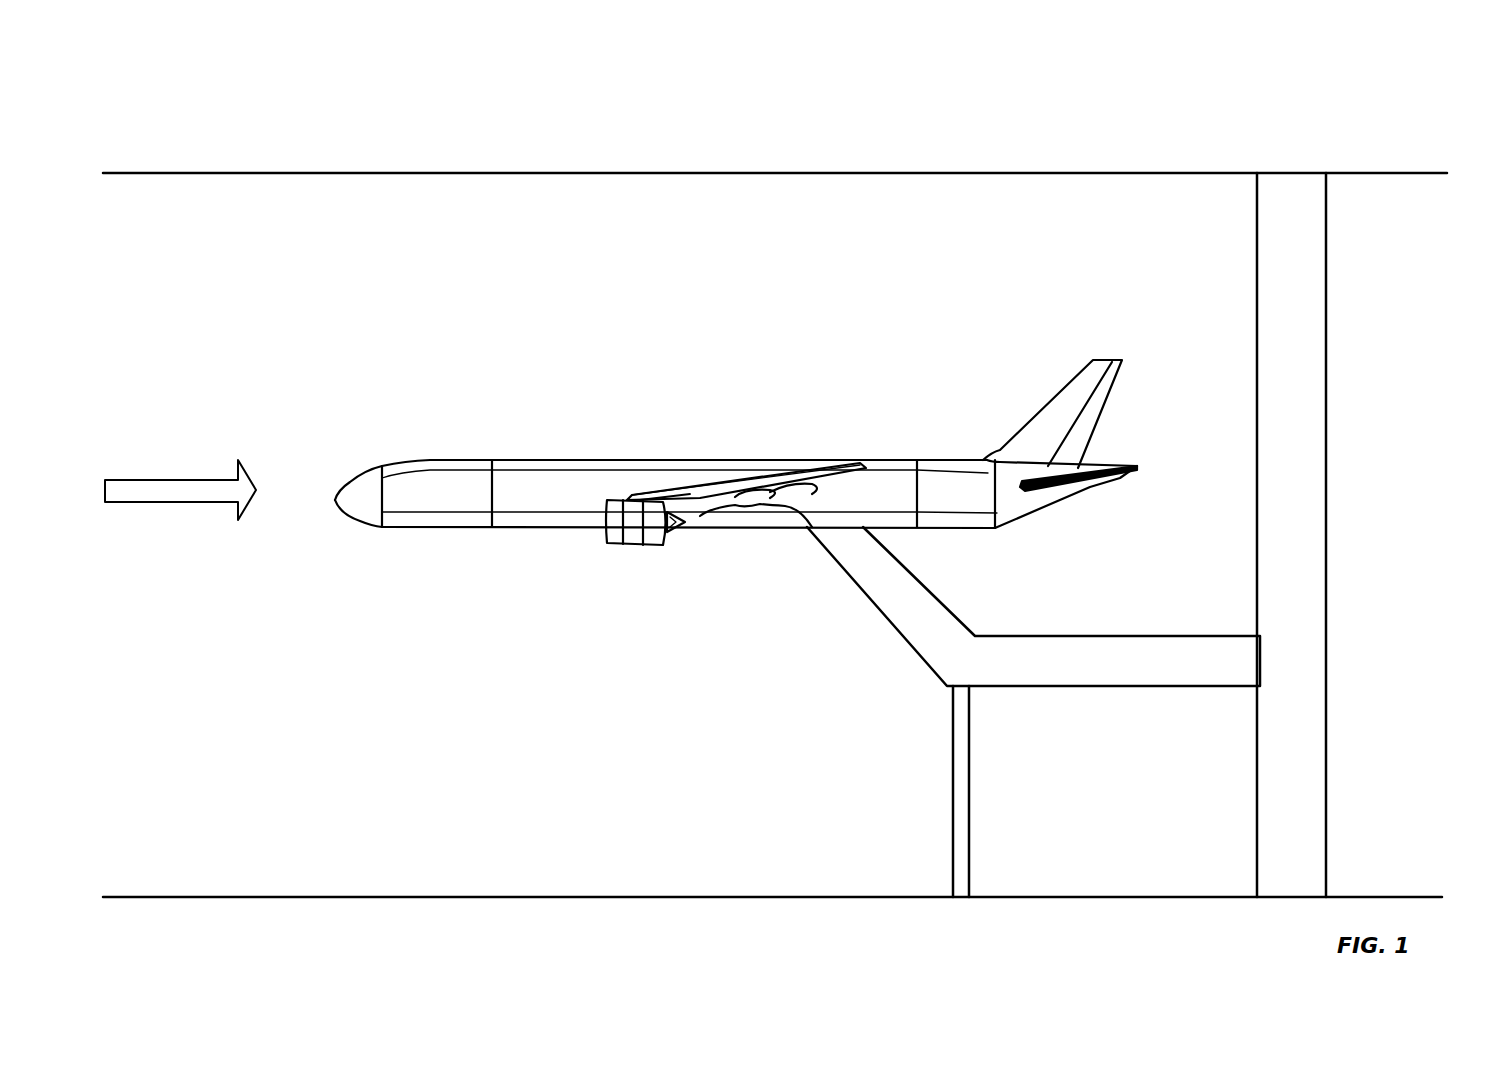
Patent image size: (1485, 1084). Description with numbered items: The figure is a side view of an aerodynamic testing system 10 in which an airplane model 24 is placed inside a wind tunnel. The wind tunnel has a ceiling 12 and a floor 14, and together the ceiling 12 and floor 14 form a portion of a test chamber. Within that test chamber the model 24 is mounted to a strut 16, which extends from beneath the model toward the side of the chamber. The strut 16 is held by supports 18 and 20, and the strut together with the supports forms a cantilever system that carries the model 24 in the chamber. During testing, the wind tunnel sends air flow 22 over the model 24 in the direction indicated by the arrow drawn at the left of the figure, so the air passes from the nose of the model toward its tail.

The aerodynamic testing system 10 is at (310, 138).
The ceiling 12 is at (616, 172).
The floor 14 is at (617, 895).
The strut 16 is at (1033, 606).
The support 18 is at (970, 830).
The support 20 is at (1326, 523).
The air flow 22 is at (157, 496).
The airplane model 24 is at (451, 458).